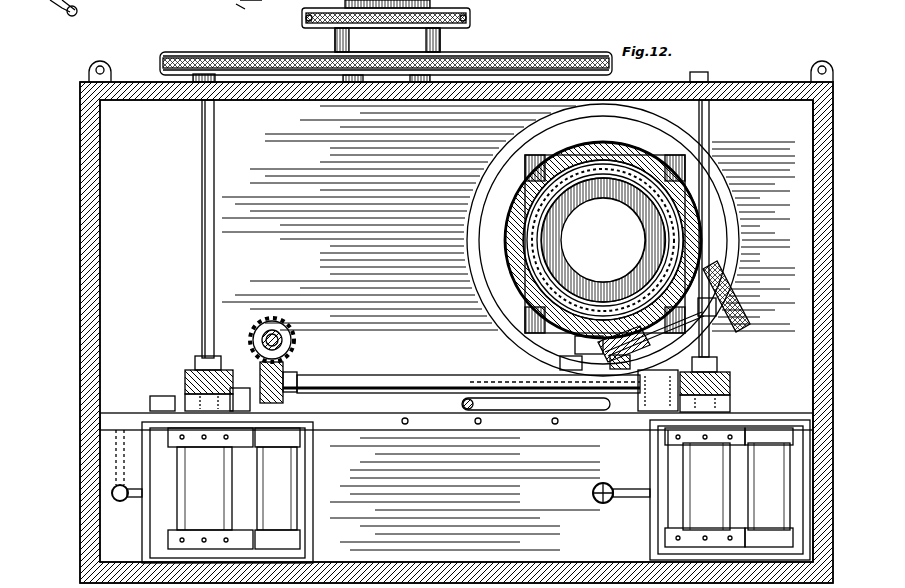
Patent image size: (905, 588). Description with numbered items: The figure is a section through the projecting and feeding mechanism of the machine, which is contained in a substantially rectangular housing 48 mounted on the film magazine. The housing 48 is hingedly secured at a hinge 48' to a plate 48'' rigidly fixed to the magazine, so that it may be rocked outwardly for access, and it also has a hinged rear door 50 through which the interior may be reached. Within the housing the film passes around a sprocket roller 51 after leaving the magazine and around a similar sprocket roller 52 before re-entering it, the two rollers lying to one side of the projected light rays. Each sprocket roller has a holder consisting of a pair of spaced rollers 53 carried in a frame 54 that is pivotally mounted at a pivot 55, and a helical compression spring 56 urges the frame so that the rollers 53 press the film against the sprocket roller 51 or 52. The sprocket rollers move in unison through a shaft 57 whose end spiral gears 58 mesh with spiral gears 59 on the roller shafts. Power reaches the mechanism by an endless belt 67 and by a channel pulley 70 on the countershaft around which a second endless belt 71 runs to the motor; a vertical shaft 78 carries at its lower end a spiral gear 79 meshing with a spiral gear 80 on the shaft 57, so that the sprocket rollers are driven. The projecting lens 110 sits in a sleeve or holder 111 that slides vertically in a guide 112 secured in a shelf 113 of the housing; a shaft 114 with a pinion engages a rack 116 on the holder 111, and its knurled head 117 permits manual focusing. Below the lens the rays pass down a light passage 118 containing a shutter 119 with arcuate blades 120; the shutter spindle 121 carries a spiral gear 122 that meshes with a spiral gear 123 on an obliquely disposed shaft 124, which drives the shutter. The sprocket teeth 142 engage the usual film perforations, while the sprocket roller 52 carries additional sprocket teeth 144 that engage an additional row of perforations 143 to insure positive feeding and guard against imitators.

The housing 48 is at (456, 319).
The hinge 48' is at (93, 62).
The plate 48'' is at (440, 103).
The hinged rear door 50 is at (816, 252).
The sprocket roller 51 is at (700, 532).
The sprocket roller 52 is at (210, 488).
The spaced rollers 53 is at (524, 488).
The frame 54 is at (305, 432).
The pivot 55 is at (145, 530).
The helical compression spring 56 is at (592, 493).
The shaft 57 is at (400, 378).
The spiral gears 58 is at (216, 366).
The spiral gears 59 is at (195, 382).
The endless belt 67 is at (470, 18).
The channel pulley 70 is at (538, 55).
The endless belt 71 is at (505, 60).
The vertical shaft 78 is at (293, 340).
The spiral gear 79 is at (282, 326).
The spiral gear 80 is at (298, 368).
The projecting lens 110 is at (603, 240).
The sleeve or holder 111 is at (540, 290).
The guide 112 is at (520, 272).
The shelf 113 is at (658, 390).
The shaft 114 is at (715, 320).
The rack 116 is at (600, 350).
The knurled head 117 is at (748, 330).
The light passage 118 is at (500, 260).
The shutter 119 is at (545, 326).
The arcuate blades 120 is at (548, 160).
The spindle 121 is at (590, 345).
The spiral gear 122 is at (590, 418).
The spiral gear 123 is at (650, 415).
The obliquely disposed shaft 124 is at (522, 410).
The sprocket teeth 142 is at (706, 447).
The additional row of perforations 143 is at (466, 402).
The additional sprocket teeth 144 is at (670, 447).